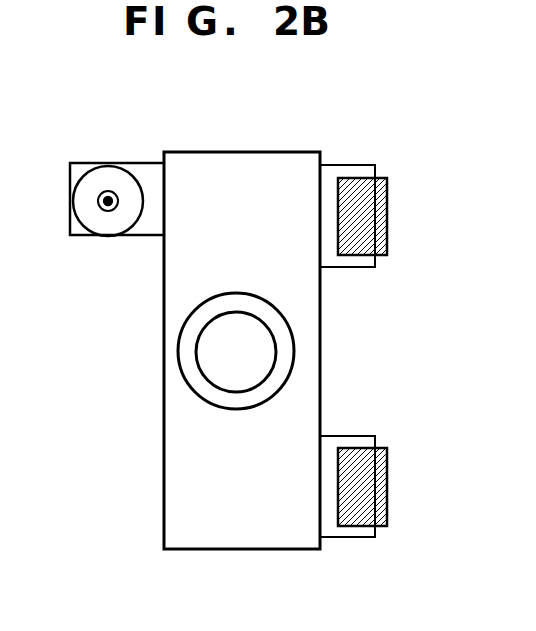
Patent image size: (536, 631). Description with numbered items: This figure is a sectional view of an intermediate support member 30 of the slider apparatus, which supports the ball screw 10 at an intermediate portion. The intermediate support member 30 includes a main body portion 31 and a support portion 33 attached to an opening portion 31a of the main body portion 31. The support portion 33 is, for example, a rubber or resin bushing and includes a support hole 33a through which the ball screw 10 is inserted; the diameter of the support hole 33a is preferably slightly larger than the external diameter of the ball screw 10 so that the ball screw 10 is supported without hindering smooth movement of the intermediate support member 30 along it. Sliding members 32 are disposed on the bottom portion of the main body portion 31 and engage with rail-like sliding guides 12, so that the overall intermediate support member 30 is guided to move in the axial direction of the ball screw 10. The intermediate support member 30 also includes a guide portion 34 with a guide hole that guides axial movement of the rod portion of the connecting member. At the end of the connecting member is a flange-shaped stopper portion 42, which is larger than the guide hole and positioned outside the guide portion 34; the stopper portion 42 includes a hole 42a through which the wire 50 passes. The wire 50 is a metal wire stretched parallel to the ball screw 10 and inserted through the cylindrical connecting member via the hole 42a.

The ball screw 10 is at (268, 338).
The sliding guide 12 is at (383, 216).
The intermediate support member 30 is at (132, 522).
The main body portion 31 is at (163, 420).
The opening portion 31a is at (231, 317).
The sliding member 32 is at (345, 168).
The support portion 33 is at (245, 409).
The support hole 33a is at (197, 357).
The guide portion 34 is at (138, 163).
The stopper portion 42 is at (100, 174).
The hole 42a is at (107, 211).
The wire 50 is at (98, 199).